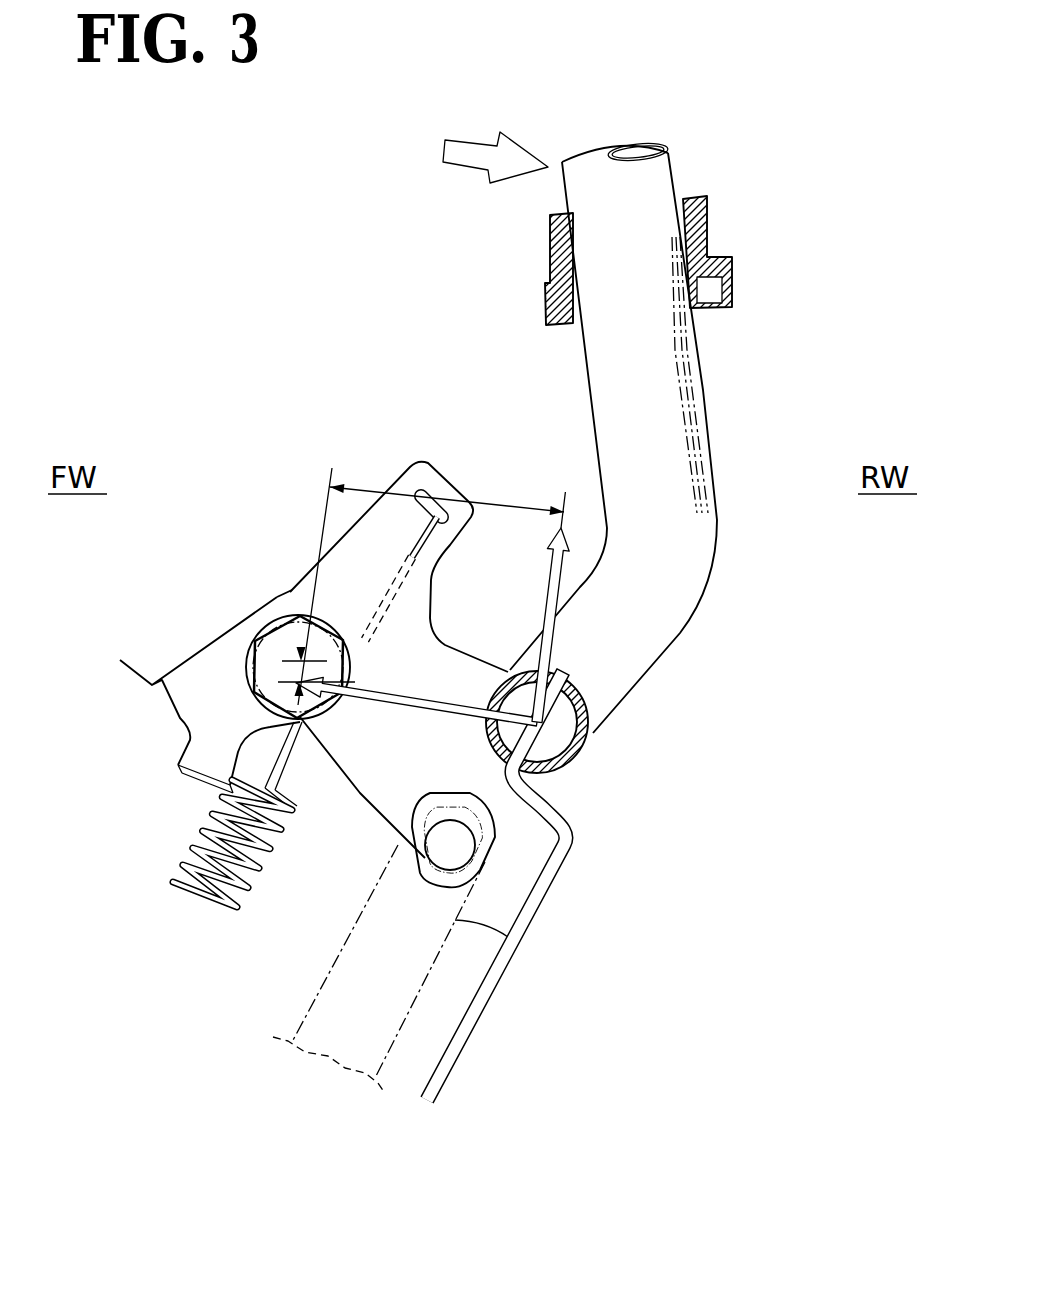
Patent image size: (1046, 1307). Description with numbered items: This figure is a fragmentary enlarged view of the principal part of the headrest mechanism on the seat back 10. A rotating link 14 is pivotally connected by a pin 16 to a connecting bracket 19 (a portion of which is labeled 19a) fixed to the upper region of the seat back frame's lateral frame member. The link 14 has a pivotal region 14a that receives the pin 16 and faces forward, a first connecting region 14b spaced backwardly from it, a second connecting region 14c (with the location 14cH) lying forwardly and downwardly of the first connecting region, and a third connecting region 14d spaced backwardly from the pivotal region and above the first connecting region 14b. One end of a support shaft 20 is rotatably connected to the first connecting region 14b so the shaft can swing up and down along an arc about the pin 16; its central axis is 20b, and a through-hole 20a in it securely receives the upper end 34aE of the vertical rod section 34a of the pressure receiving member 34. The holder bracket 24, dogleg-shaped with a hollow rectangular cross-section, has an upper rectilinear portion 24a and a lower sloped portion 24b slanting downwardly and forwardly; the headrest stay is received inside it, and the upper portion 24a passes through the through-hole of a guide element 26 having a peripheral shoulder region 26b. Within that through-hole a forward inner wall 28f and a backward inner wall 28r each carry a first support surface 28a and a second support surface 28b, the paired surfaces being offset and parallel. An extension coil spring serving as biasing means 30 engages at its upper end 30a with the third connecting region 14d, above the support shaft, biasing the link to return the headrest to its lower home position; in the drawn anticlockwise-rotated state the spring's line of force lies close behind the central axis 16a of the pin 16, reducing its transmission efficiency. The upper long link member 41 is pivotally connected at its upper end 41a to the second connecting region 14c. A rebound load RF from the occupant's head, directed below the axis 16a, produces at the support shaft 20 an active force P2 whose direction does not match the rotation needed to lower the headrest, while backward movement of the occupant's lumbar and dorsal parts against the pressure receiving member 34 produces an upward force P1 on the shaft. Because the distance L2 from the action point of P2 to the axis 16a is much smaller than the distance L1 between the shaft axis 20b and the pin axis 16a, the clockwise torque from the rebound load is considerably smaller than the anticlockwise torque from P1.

The seat back 10 is at (226, 362).
The rotating link 14 is at (462, 642).
The pivotal region 14a is at (278, 600).
The first connecting region 14b is at (547, 798).
The second connecting region 14c is at (487, 862).
The hole in arm boss 14cH is at (415, 850).
The third connecting region 14d is at (403, 474).
The pin 16 is at (247, 670).
The central axis of pivot pin 16a is at (305, 660).
The connecting bracket 19 is at (157, 680).
The bracket flange 19a is at (180, 770).
The support shaft 20 is at (587, 748).
The through-hole of support shaft 20a is at (567, 675).
The central axis of support shaft 20b is at (600, 720).
The holder bracket 24 is at (703, 560).
The upper rectilinear portion 24a is at (697, 441).
The lower sloped portion 24b is at (660, 638).
The guide element 26 is at (722, 226).
The shoulder region 26b is at (552, 283).
The first support surfaces 28a is at (683, 204).
The second support surfaces 28b is at (575, 216).
The forward inner wall 28f is at (580, 269).
The backward inner wall 28r is at (672, 263).
The biasing means 30 is at (200, 847).
The upper end of extension coil spring 30a is at (430, 537).
The pressure receiving member 34 is at (497, 1057).
The wire straight portion 34a is at (493, 983).
The upper end of upper vertical rod section 34aE is at (568, 806).
The upper long link member 41 is at (398, 1080).
The upper end of upper long link member 41a is at (508, 940).
The rebound load RF is at (495, 137).
The distance L1 is at (431, 586).
The distance L2 is at (255, 645).
The upward active force P1 is at (553, 627).
The active force of rebound load P2 is at (398, 705).